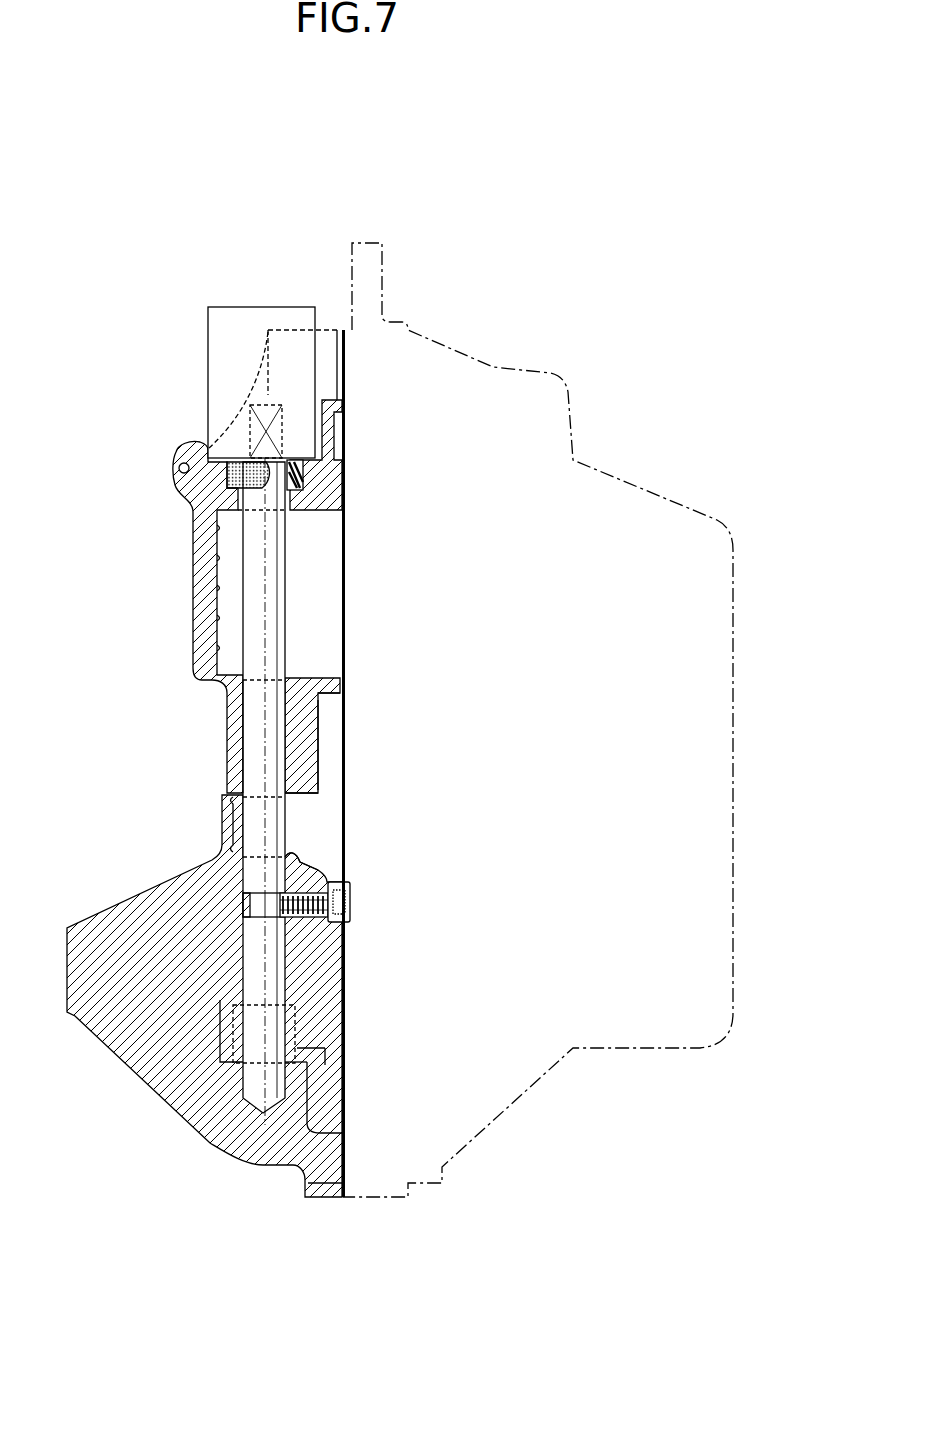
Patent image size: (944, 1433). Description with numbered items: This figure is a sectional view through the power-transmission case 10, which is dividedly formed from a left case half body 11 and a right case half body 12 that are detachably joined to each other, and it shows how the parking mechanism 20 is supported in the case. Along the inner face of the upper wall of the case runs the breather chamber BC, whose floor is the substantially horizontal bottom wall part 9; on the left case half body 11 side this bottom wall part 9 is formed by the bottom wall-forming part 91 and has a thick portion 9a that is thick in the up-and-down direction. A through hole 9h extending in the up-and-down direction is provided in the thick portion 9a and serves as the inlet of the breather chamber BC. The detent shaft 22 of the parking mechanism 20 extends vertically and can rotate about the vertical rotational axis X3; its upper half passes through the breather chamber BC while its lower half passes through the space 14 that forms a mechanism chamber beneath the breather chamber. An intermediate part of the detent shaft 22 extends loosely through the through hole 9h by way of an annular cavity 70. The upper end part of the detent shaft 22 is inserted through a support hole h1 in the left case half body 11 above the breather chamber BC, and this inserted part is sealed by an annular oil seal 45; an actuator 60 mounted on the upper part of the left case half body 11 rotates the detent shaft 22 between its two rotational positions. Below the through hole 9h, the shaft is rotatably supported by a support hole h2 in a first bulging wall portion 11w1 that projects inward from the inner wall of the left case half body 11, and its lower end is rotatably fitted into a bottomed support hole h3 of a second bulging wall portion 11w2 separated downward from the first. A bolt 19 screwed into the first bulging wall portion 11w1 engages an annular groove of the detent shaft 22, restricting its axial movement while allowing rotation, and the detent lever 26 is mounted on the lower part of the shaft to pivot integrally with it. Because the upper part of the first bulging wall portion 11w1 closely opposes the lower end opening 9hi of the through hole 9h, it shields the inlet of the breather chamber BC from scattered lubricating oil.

The actuator 60 is at (247, 318).
The vertical rotational axis X3 is at (265, 398).
The support hole h1 is at (237, 455).
The annular oil seal 45 is at (298, 482).
The breather chamber BC is at (215, 590).
The detent shaft 22 is at (277, 592).
The bottom wall part 9 is at (309, 674).
The through hole 9h is at (255, 733).
The bottom wall-forming part 91 is at (327, 695).
The annular cavity 70 is at (243, 762).
The thick portion 9a is at (317, 745).
The parking mechanism 20 is at (242, 830).
The lower end opening 9hi is at (282, 798).
The support hole h2 is at (276, 858).
The first bulging wall portion 11w1 is at (292, 866).
The space 14 is at (332, 957).
The bolt 19 is at (302, 913).
The bottomed support hole h3 is at (283, 1077).
The detent lever 26 is at (325, 1066).
The second bulging wall portion 11w2 is at (307, 1100).
The left case half body 11 is at (253, 1168).
The right case half body 12 is at (430, 1188).
The power-transmission case 10 is at (405, 1327).